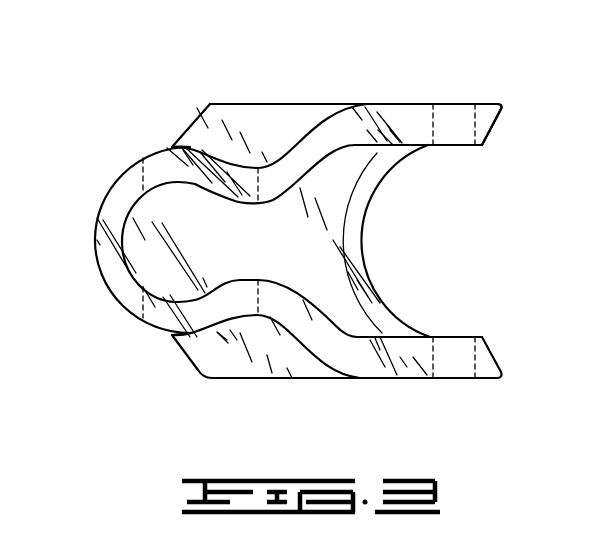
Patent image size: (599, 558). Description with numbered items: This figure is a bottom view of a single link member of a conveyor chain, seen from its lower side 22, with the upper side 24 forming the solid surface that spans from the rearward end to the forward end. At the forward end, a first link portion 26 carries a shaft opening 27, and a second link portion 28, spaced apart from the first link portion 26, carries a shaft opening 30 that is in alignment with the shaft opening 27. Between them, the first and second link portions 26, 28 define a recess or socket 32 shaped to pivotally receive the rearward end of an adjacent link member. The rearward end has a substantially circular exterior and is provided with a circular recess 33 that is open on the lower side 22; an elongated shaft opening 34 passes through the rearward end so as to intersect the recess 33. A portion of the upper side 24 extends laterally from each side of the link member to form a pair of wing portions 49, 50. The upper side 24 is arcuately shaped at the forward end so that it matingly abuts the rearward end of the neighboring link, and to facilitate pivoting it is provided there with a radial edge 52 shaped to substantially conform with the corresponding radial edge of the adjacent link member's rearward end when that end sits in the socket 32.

The lower side 22 is at (406, 112).
The upper side 24 is at (321, 104).
The first link portion 26 is at (490, 121).
The shaft opening 27 is at (478, 127).
The second link portion 28 is at (491, 364).
The shaft opening 30 is at (471, 349).
The recess or socket 32 is at (303, 238).
The circular recess 33 is at (138, 256).
The elongated shaft opening 34 is at (147, 174).
The wing portion 49 is at (232, 104).
The wing portion 50 is at (230, 379).
The radial edge 52 is at (357, 219).